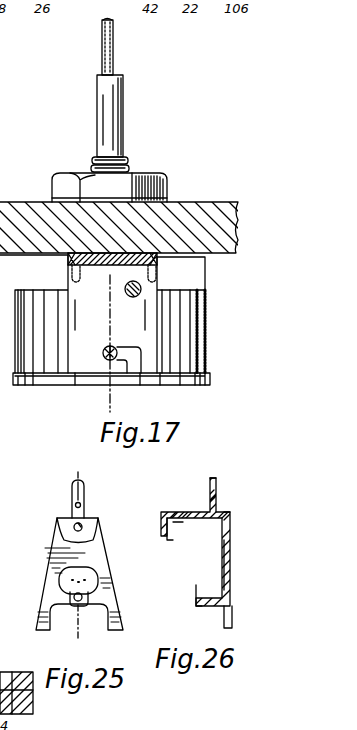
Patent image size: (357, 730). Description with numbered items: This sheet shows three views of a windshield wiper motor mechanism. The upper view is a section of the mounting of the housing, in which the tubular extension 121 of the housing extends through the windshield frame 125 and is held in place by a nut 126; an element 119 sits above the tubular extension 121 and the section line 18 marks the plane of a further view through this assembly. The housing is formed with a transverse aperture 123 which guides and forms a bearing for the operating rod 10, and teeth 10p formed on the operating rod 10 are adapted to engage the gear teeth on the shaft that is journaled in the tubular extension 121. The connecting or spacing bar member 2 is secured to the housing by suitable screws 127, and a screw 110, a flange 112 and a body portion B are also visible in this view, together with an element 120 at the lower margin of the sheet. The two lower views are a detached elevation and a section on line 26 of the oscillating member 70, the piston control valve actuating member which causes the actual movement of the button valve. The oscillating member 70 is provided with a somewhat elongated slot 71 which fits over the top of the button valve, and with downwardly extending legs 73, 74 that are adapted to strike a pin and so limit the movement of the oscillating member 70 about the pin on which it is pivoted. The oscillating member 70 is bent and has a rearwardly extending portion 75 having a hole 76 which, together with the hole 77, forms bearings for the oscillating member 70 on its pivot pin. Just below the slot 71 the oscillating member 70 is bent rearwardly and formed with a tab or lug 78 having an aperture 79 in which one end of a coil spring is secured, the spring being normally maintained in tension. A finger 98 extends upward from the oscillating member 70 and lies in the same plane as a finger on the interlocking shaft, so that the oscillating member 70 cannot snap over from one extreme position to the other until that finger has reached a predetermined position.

In FIG. 17, the section line 18— 18 is at (108, 14).
In FIG. 17, the threaded stem 119 is at (113, 50).
In FIG. 17, the tubular extension 121 is at (123, 157).
In FIG. 17, the nut 126 is at (150, 185).
In FIG. 17, the windshield frame 125 is at (190, 225).
In FIG. 17, the connecting or spacing bar member 2 is at (157, 258).
In FIG. 17, the operating rod 10 is at (141, 290).
In FIG. 17, the teeth 10p is at (125, 290).
In FIG. 17, the transverse aperture 123 is at (141, 296).
In FIG. 17, the screws 127 is at (66, 264).
In FIG. 17, the body B is at (173, 347).
In FIG. 17, the screw 110 is at (103, 351).
In FIG. 17, the base flange 112 is at (168, 376).
In FIG. 25, the section line 26— 26 is at (106, 462).
In FIG. 25, the finger 98 is at (72, 494).
In FIG. 26, the finger 98 is at (217, 492).
In FIG. 25, the oscillating member 70 is at (60, 549).
In FIG. 26, the oscillating member 70 is at (226, 552).
In FIG. 25, the rearwardly extending portion 75 is at (60, 530).
In FIG. 26, the rearwardly extending portion 75 is at (169, 520).
In FIG. 25, the hole 76 is at (82, 525).
In FIG. 26, the hole 76 is at (176, 526).
In FIG. 25, the elongated slot 71 is at (92, 575).
In FIG. 26, the elongated slot 71 is at (233, 568).
In FIG. 25, the tab or lug 78 is at (106, 584).
In FIG. 25, the aperture 79 is at (77, 604).
In FIG. 26, the aperture 79 is at (198, 598).
In FIG. 25, the downwardly extending leg 74 is at (118, 615).
In FIG. 25, the downwardly extending leg 73 is at (42, 628).
In FIG. 26, the downwardly extending leg 73 is at (233, 615).
In FIG. 26, the hole 77 is at (233, 527).
In FIG. 25, the block 120 is at (4, 672).